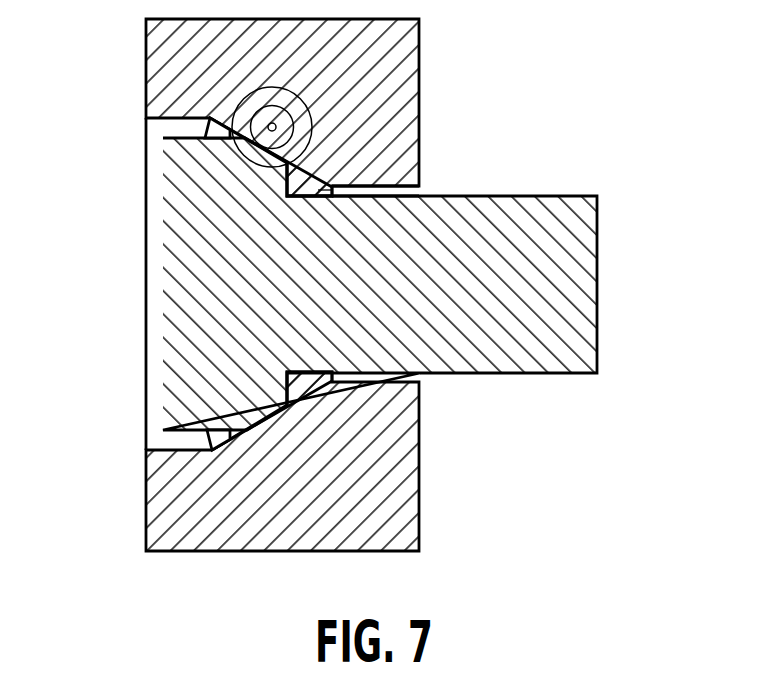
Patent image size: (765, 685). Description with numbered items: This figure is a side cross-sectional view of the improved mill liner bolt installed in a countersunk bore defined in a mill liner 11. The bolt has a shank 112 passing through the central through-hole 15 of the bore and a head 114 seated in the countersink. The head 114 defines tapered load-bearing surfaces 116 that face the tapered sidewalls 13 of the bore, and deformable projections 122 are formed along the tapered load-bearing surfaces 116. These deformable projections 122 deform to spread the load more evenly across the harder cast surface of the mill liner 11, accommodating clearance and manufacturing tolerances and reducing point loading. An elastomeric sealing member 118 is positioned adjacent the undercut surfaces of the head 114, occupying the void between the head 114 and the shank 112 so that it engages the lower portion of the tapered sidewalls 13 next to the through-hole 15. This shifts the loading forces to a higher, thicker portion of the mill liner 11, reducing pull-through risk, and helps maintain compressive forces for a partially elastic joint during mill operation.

The mill liner 11 is at (146, 72).
The head 114 is at (163, 273).
The shank 112 is at (573, 195).
The elastomeric sealing member 118 is at (318, 170).
The tapered load-bearing surfaces 116 is at (287, 403).
The deformable projections 122 is at (208, 126).
The tapered sidewalls 13 is at (248, 436).
The through-hole 15 is at (410, 192).